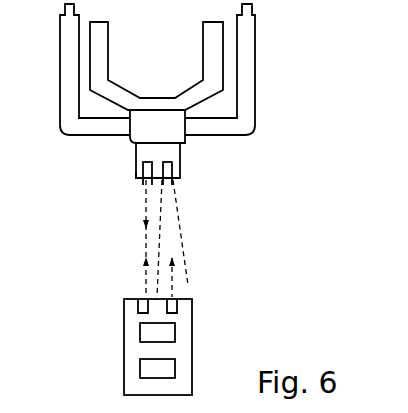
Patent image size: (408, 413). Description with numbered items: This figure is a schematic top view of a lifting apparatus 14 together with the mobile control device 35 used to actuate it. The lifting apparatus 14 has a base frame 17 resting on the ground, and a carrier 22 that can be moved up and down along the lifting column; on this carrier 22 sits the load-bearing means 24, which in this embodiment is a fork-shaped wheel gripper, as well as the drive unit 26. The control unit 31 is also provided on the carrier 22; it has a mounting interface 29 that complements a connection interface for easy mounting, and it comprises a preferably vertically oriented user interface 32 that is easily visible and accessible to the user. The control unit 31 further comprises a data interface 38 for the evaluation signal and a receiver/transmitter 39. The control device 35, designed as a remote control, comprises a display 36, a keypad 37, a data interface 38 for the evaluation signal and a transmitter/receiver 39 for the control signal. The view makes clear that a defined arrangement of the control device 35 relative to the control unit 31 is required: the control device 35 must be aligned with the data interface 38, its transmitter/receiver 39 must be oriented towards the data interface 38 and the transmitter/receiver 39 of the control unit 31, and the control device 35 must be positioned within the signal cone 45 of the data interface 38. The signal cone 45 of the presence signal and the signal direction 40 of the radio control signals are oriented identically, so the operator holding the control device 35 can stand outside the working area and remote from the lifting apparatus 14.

The lifting apparatus 14 is at (283, 38).
The base frame 17 is at (244, 97).
The carrier 22 is at (174, 134).
The load-bearing means 24 is at (188, 59).
The drive unit 26 is at (106, 155).
The mounting interface 29 is at (97, 136).
The control unit 31 is at (182, 162).
The user interface 32 is at (138, 183).
The control device 35 is at (105, 337).
The display 36 is at (167, 333).
The keypad 37 is at (167, 370).
The data interface 38 is at (173, 187).
The transmitter/receiver 39 is at (143, 184).
The signal direction 40 is at (143, 273).
The signal cone 45 is at (182, 245).